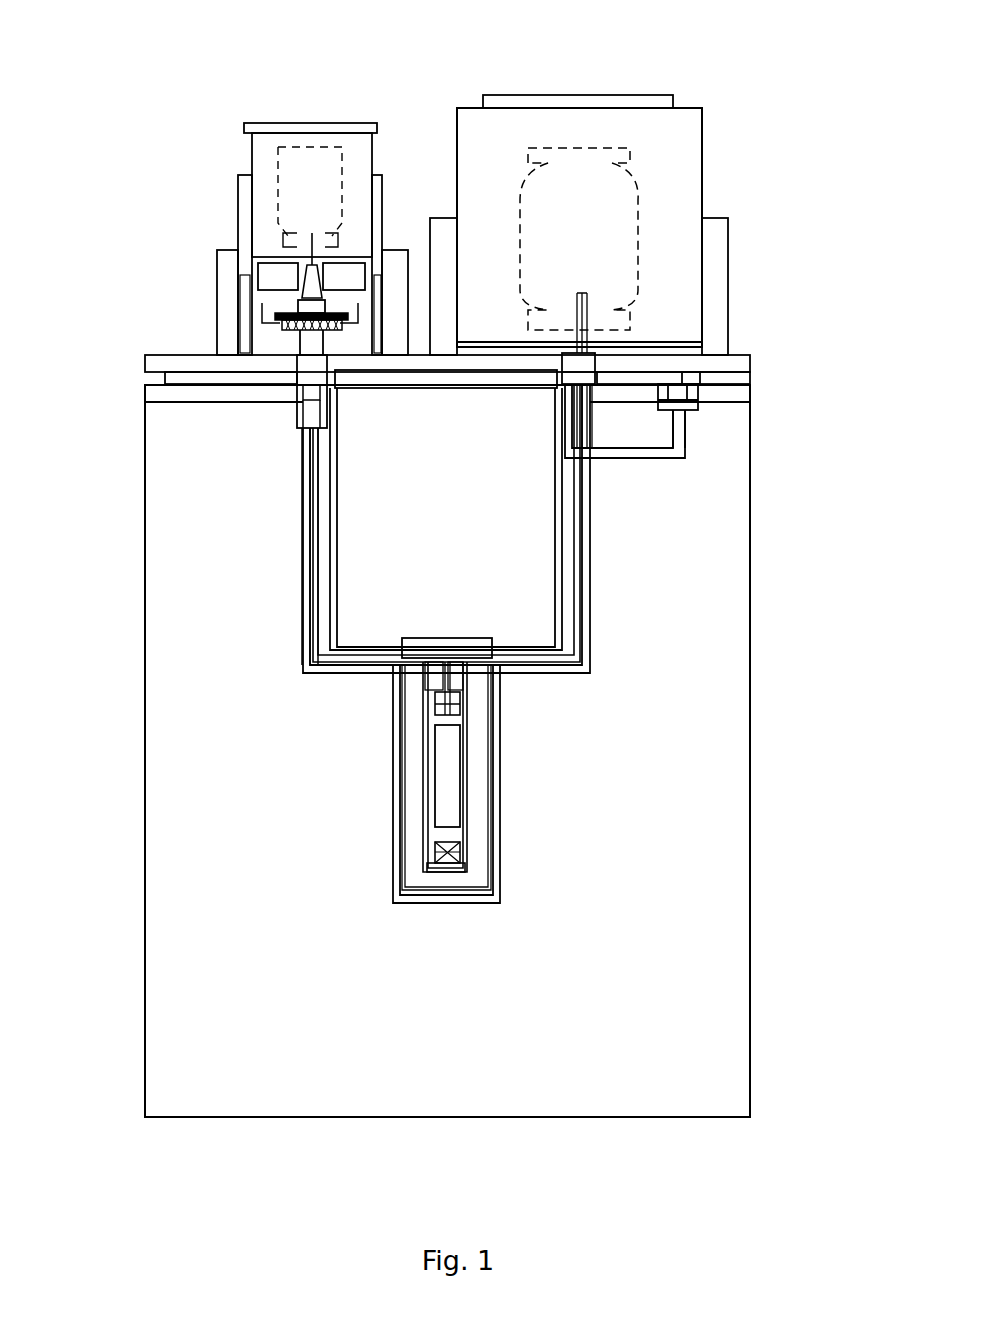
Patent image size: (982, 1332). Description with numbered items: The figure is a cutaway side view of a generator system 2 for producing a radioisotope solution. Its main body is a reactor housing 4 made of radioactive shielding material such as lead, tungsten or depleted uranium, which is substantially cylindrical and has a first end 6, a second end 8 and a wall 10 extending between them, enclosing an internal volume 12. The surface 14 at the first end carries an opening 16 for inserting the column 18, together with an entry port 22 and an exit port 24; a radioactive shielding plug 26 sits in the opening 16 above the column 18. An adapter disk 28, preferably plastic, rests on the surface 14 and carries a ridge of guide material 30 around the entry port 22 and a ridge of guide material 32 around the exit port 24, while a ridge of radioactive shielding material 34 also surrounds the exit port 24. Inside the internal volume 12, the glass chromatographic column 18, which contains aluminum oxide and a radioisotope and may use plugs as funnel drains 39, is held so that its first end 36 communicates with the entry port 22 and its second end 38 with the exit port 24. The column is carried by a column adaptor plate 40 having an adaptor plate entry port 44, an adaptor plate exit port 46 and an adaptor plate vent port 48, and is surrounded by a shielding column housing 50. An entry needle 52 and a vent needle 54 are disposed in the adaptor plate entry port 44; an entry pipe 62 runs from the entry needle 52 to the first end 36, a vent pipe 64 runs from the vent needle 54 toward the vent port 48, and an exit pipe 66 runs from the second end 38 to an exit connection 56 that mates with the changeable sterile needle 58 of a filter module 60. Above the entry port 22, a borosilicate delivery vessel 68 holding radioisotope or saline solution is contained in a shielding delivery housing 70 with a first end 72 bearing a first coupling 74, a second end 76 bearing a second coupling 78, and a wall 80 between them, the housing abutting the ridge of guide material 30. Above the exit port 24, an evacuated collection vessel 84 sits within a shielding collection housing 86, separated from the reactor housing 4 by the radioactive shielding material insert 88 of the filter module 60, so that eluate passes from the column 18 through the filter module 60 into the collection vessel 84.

The generator system 2 is at (780, 805).
The reactor housing 4 is at (750, 1024).
The first end 6 is at (143, 393).
The second end 8 is at (268, 1118).
The wall 10 is at (145, 786).
The internal volume 12 is at (200, 963).
The surface 14 is at (175, 380).
The opening 16 is at (306, 513).
The column 18 is at (467, 757).
The entry port 22 is at (660, 458).
The exit port 24 is at (300, 400).
The radioactive shielding plug 26 is at (470, 512).
The adapter disk 28 is at (752, 360).
The ridge of guide material 30 is at (717, 293).
The ridge of guide material 32 is at (244, 292).
The ridge of radioactive shielding material 34 is at (298, 350).
The first end 36 is at (468, 667).
The second end 38 is at (452, 872).
The funnel drains 39 is at (445, 843).
The column adaptor plate 40 is at (702, 386).
The adaptor plate entry port 44 is at (683, 432).
The adaptor plate exit port 46 is at (297, 345).
The adaptor plate vent port 48 is at (698, 405).
The column housing 50 is at (497, 825).
The entry needle 52 is at (577, 293).
The vent needle 54 is at (585, 293).
The exit connection 56 is at (295, 377).
The changeable sterile needle 58 is at (311, 233).
The filter module 60 is at (230, 177).
The entry pipe 62 is at (582, 595).
The vent pipe 64 is at (632, 458).
The exit pipe 66 is at (427, 790).
The delivery vessel 68 is at (517, 158).
The delivery housing 70 is at (703, 133).
The first end 72 is at (692, 106).
The first coupling 74 is at (536, 95).
The second end 76 is at (670, 353).
The second coupling 78 is at (650, 343).
The wall 80 is at (703, 163).
The collection vessel 84 is at (337, 145).
The collection housing 86 is at (303, 123).
The radioactive shielding material insert 88 is at (347, 272).